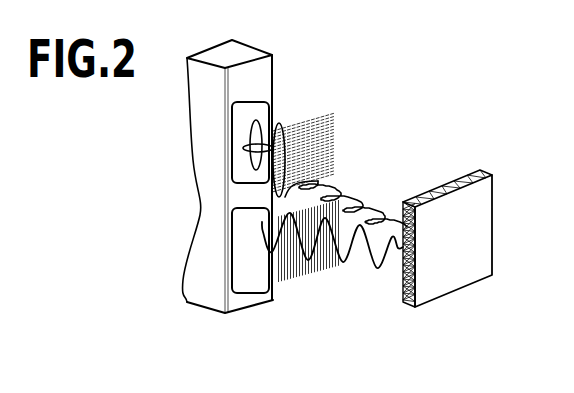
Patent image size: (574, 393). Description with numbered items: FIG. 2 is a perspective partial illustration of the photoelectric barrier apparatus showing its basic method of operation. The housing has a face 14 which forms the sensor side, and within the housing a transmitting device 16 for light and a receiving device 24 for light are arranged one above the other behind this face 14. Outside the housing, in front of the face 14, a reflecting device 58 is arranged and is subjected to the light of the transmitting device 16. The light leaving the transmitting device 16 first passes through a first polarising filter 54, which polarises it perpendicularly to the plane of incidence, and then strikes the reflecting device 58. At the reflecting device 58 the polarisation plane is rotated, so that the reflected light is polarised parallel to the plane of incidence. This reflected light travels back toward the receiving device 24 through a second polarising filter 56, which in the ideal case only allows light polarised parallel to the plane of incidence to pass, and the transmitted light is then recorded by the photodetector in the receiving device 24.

The face 14 is at (237, 303).
The transmitting device 16 is at (266, 102).
The receiving device 24 is at (248, 282).
The first polarising filter 54 is at (318, 135).
The second polarising filter 56 is at (288, 267).
The reflecting device 58 is at (445, 273).